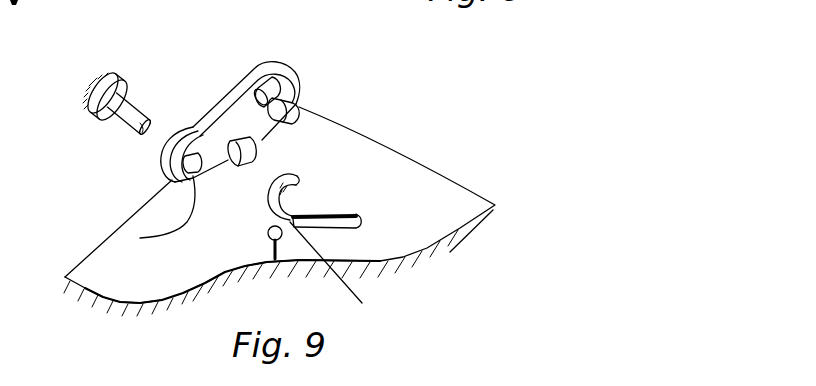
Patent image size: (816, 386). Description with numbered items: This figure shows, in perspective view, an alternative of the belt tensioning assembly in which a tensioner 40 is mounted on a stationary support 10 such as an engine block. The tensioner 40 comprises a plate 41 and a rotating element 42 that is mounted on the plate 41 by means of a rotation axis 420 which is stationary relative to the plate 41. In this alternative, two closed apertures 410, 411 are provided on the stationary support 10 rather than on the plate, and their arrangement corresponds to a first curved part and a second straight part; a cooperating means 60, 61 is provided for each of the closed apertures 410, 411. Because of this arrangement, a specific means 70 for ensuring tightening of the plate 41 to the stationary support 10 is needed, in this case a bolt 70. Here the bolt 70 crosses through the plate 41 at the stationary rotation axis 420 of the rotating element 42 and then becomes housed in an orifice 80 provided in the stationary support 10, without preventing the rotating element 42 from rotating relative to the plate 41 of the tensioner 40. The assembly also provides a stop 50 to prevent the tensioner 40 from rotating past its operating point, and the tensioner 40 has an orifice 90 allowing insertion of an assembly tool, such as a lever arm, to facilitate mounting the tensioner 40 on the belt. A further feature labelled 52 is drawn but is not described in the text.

The stationary support 10 is at (347, 178).
The tensioner 40 is at (220, 80).
The plate 41 is at (232, 118).
The rotating element 42 is at (156, 164).
The stop 50 is at (362, 223).
The edge 52 is at (362, 303).
The cooperating means 60 is at (271, 77).
The cooperating means 61 is at (237, 167).
The bolt 70 is at (102, 79).
The orifice 80 is at (275, 262).
The orifice 90 is at (290, 99).
The closed aperture 410 is at (288, 182).
The closed aperture 411 is at (356, 212).
The rotation axis 420 is at (140, 238).